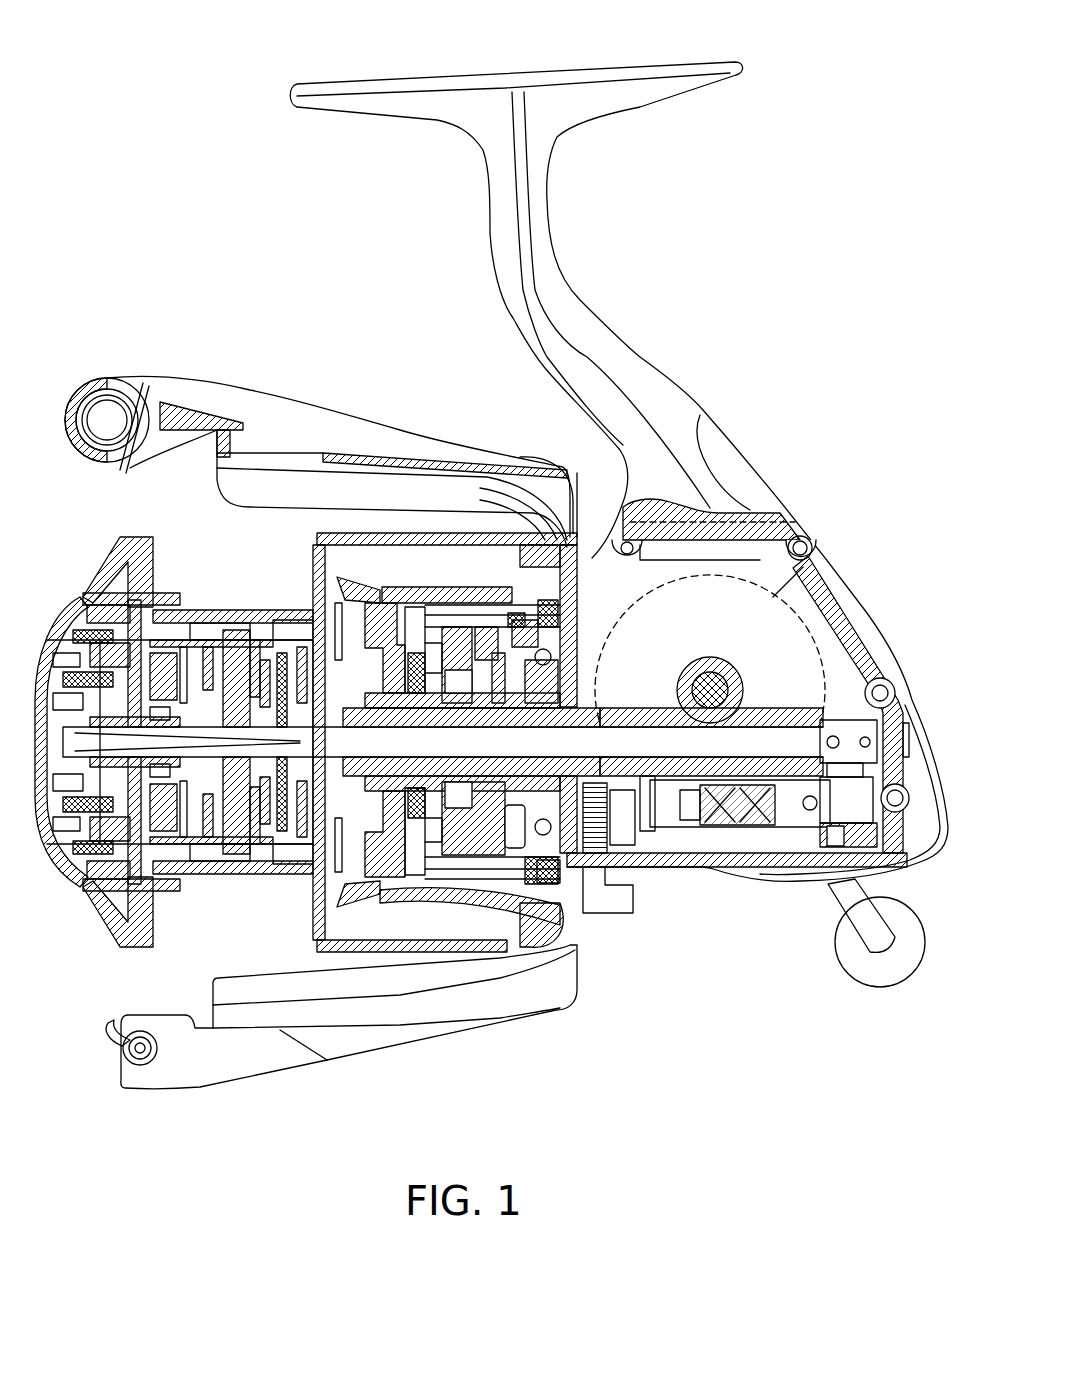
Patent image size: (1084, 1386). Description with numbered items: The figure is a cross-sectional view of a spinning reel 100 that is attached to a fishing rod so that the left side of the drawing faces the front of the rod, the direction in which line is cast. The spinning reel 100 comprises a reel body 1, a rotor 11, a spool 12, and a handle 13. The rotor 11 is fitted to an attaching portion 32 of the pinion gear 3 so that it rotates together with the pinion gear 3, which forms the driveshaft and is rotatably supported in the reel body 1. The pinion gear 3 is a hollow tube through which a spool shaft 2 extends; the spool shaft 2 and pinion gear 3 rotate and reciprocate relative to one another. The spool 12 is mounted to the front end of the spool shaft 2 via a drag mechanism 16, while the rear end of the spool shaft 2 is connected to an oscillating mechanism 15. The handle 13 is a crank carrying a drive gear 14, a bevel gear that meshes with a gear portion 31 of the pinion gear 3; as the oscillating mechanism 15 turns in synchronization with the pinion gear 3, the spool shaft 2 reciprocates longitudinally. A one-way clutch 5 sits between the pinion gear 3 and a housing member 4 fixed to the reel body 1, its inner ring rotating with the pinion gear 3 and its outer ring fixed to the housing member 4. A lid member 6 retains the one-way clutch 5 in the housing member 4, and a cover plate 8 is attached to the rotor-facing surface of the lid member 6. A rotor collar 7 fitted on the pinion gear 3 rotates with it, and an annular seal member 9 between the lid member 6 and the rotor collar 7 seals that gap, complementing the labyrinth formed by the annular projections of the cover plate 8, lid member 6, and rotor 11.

The spinning reel 100 is at (764, 176).
The reel body 1 is at (777, 474).
The spool shaft 2 is at (703, 747).
The pinion gear 3 is at (554, 786).
The housing member 4 is at (577, 527).
The one-way clutch 5 is at (465, 590).
The lid member 6 is at (435, 600).
The rotor collar 7 is at (410, 783).
The cover plate 8 is at (392, 620).
The annular seal member 9 is at (433, 817).
The rotor 11 is at (437, 426).
The spool 12 is at (200, 598).
The handle 13 is at (881, 993).
The drive gear 14 is at (803, 570).
The oscillating mechanism 15 is at (770, 823).
The drag mechanism 16 is at (223, 873).
The gear portion 31 is at (617, 823).
The attaching portion 32 is at (473, 840).